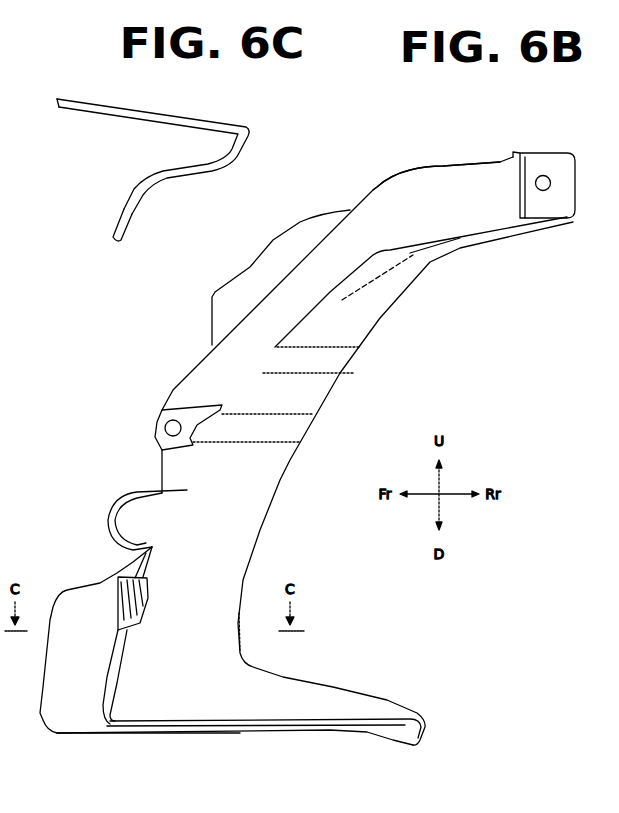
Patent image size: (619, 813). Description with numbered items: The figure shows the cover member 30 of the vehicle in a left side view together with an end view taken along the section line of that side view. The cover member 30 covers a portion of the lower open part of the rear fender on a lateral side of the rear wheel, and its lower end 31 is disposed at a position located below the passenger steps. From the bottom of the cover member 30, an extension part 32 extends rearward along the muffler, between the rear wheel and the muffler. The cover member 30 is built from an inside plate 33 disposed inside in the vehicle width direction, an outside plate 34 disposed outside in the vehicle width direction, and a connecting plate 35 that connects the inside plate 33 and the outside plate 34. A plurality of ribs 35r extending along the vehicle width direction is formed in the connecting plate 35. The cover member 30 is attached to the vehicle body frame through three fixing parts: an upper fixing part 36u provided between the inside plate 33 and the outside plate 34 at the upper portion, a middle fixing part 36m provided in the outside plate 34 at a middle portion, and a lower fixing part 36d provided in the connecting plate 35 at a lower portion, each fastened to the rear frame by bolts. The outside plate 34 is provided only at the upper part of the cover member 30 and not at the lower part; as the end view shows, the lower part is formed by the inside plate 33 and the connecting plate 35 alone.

In FIG. 6B, the cover member 30 is at (302, 443).
In FIG. 6B, the lower end 31 is at (59, 745).
In FIG. 6B, the extension part 32 is at (250, 712).
In FIG. 6C, the inside plate 33 is at (88, 100).
In FIG. 6B, the inside plate 33 is at (258, 250).
In FIG. 6B, the outside plate 34 is at (372, 213).
In FIG. 6C, the connecting plate 35 is at (135, 206).
In FIG. 6B, the connecting plate 35 is at (343, 318).
In FIG. 6B, the ribs 35r is at (322, 365).
In FIG. 6B, the upper fixing part 36u is at (536, 158).
In FIG. 6B, the middle fixing part 36m is at (155, 424).
In FIG. 6B, the lower fixing part 36d is at (112, 584).